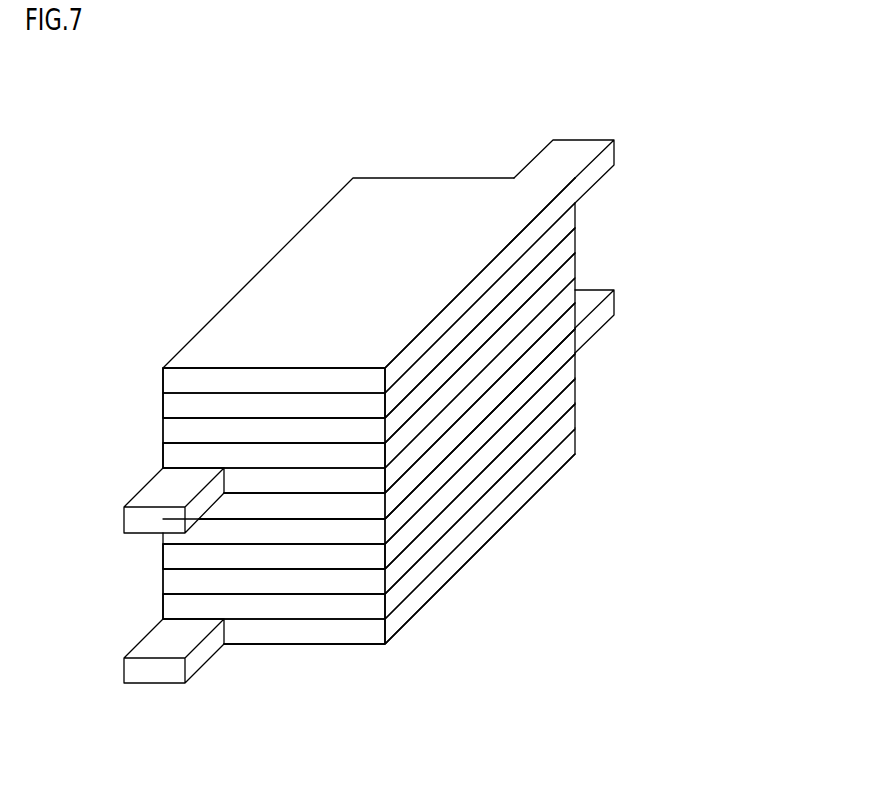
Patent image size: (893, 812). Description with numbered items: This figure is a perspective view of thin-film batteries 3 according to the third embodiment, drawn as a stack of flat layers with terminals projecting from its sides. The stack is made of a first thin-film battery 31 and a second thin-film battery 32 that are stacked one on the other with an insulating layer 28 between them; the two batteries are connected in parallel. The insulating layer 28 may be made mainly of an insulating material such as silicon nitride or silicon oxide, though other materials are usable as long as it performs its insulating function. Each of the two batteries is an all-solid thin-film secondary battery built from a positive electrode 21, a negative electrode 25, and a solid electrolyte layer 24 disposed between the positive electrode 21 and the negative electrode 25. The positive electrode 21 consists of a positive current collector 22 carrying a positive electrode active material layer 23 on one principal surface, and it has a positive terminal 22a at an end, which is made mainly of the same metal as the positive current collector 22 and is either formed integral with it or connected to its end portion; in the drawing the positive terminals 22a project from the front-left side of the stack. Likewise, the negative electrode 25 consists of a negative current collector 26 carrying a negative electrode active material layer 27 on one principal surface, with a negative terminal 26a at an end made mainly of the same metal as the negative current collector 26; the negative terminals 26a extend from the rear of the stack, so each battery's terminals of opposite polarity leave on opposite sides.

The thin-film battery 3 is at (406, 146).
The first thin-film battery 31 is at (725, 352).
The second thin-film battery 32 is at (725, 178).
The positive electrode 21 is at (680, 240).
The positive current collector 22 is at (567, 303).
The positive terminal 22a is at (152, 522).
The positive electrode active material layer 23 is at (566, 280).
The solid electrolyte layer 24 is at (566, 250).
The negative electrode 25 is at (680, 168).
The negative current collector 26 is at (568, 197).
The negative terminal 26a is at (580, 140).
The negative electrode active material layer 27 is at (566, 223).
The insulating layer 28 is at (617, 288).